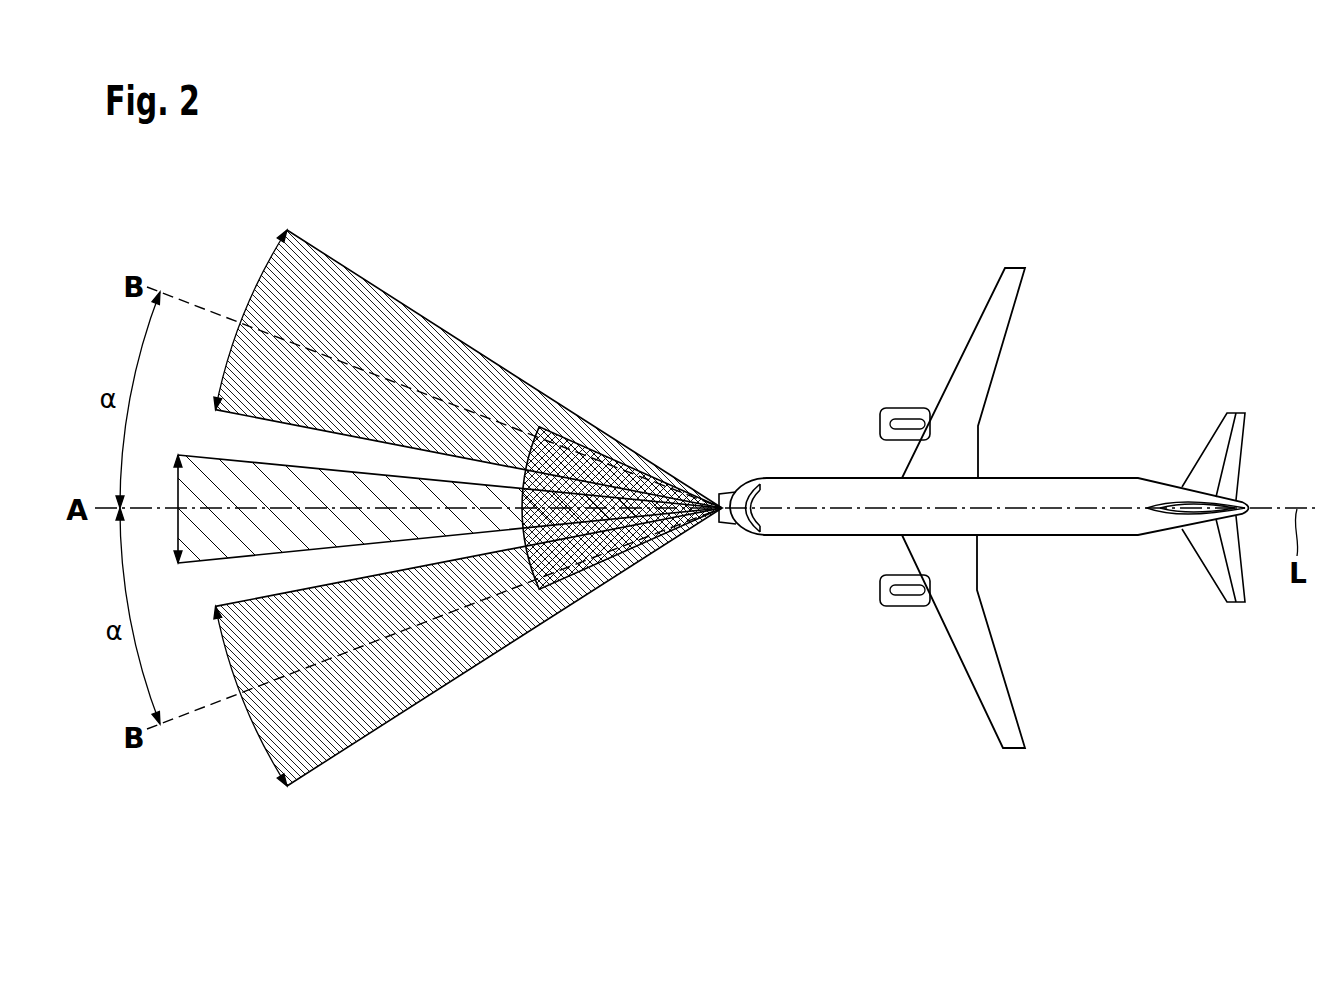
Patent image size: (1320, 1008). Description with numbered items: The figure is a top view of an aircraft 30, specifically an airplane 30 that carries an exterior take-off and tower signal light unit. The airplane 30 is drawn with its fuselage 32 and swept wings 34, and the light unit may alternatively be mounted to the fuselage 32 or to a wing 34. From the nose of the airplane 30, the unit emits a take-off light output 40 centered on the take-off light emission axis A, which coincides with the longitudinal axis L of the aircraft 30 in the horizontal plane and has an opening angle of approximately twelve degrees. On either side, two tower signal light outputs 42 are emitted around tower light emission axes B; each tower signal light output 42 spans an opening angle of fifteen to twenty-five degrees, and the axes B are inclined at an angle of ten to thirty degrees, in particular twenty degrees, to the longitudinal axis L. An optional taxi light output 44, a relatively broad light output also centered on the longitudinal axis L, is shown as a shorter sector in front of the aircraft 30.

The aircraft 30 is at (984, 508).
The fuselage 32 is at (1079, 526).
The wing 34 is at (990, 316).
The take-off light output 40 is at (193, 441).
The tower signal light outputs 42 is at (362, 254).
The taxi light output 44 is at (589, 587).